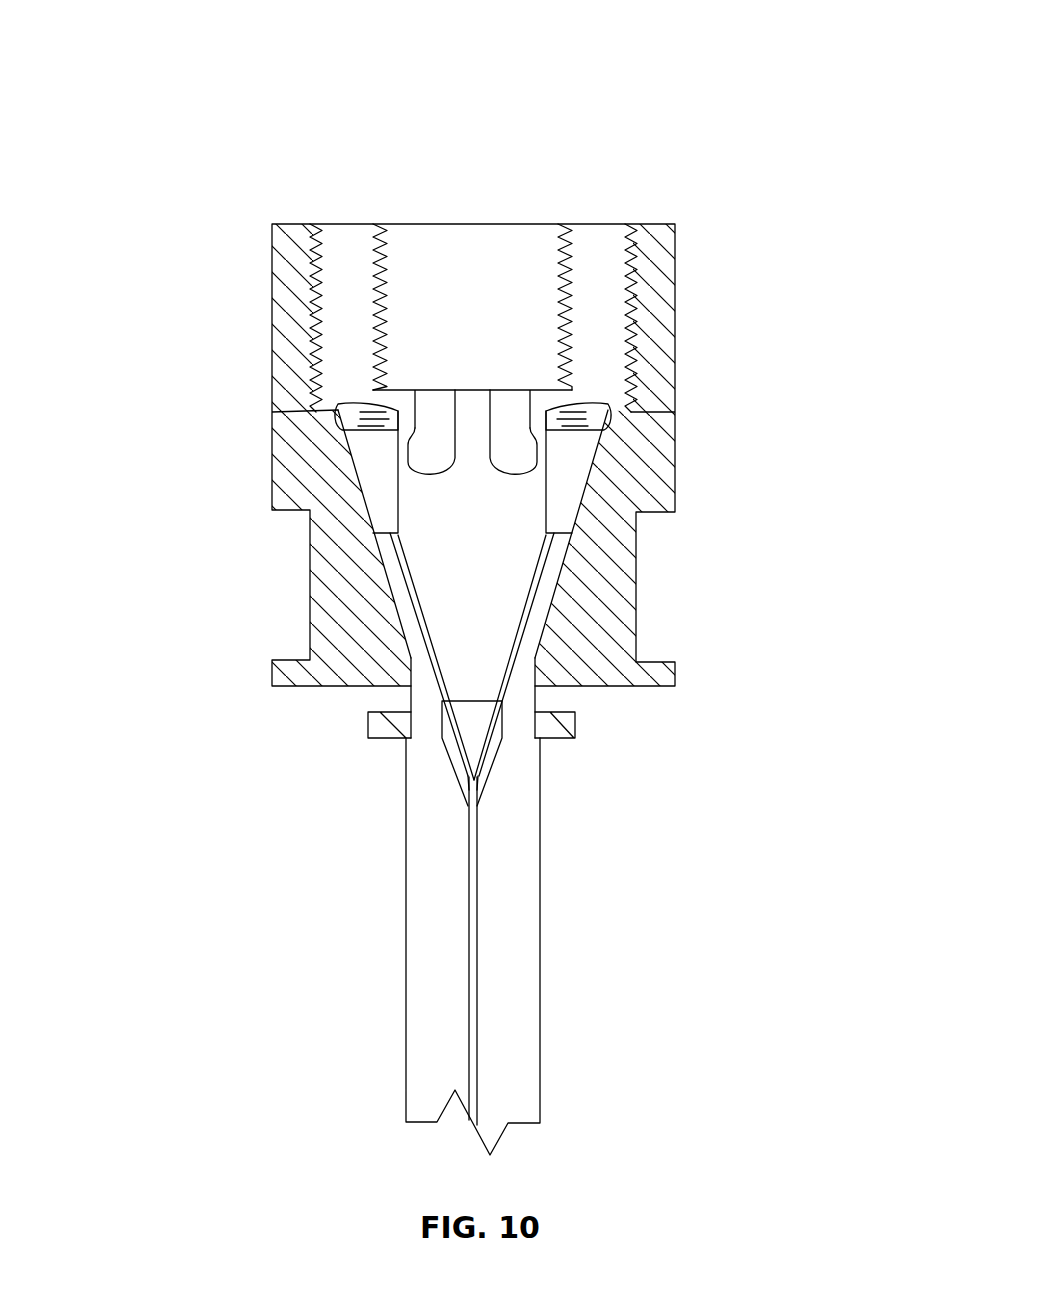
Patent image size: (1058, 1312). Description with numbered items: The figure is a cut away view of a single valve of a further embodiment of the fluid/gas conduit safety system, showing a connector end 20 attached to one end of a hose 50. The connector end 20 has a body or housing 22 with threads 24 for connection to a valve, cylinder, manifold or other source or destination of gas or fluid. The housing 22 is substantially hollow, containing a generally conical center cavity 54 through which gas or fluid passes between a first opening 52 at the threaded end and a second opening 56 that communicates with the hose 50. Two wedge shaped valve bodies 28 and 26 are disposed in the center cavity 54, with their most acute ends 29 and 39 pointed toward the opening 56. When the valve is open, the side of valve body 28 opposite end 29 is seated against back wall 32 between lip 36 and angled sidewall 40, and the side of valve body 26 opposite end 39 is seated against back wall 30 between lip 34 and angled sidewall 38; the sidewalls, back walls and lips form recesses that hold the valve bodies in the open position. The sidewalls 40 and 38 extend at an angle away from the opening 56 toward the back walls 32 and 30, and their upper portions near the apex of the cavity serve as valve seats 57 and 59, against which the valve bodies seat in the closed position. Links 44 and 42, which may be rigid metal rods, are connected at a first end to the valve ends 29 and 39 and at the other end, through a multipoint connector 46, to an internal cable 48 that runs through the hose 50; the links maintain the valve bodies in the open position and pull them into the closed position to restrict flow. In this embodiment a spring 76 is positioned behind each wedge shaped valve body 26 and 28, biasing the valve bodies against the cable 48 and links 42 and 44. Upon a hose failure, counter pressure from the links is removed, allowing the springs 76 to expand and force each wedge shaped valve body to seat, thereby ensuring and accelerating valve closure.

The connector end 20 is at (280, 96).
The housing 22 is at (677, 232).
The threads 24 is at (573, 248).
The wedge shaped valve body 26 is at (608, 410).
The wedge shaped valve body 28 is at (338, 410).
The most acute end of valve body 29 is at (374, 535).
The back wall 30 is at (600, 402).
The back wall 32 is at (344, 402).
The lip 34 is at (490, 390).
The lip 36 is at (455, 390).
The angled sidewall 38 is at (604, 466).
The most acute end of valve body 39 is at (573, 540).
The angled sidewall 40 is at (343, 466).
The link 42 is at (507, 678).
The link 44 is at (433, 680).
The multipoint connector 46 is at (490, 777).
The internal cable 48 is at (468, 1033).
The hose 50 is at (541, 1034).
The first opening 52 is at (468, 223).
The center cavity 54 is at (473, 560).
The second opening 56 is at (515, 722).
The valve seat 57 is at (400, 688).
The valve seat 59 is at (535, 657).
The spring 76 is at (358, 412).